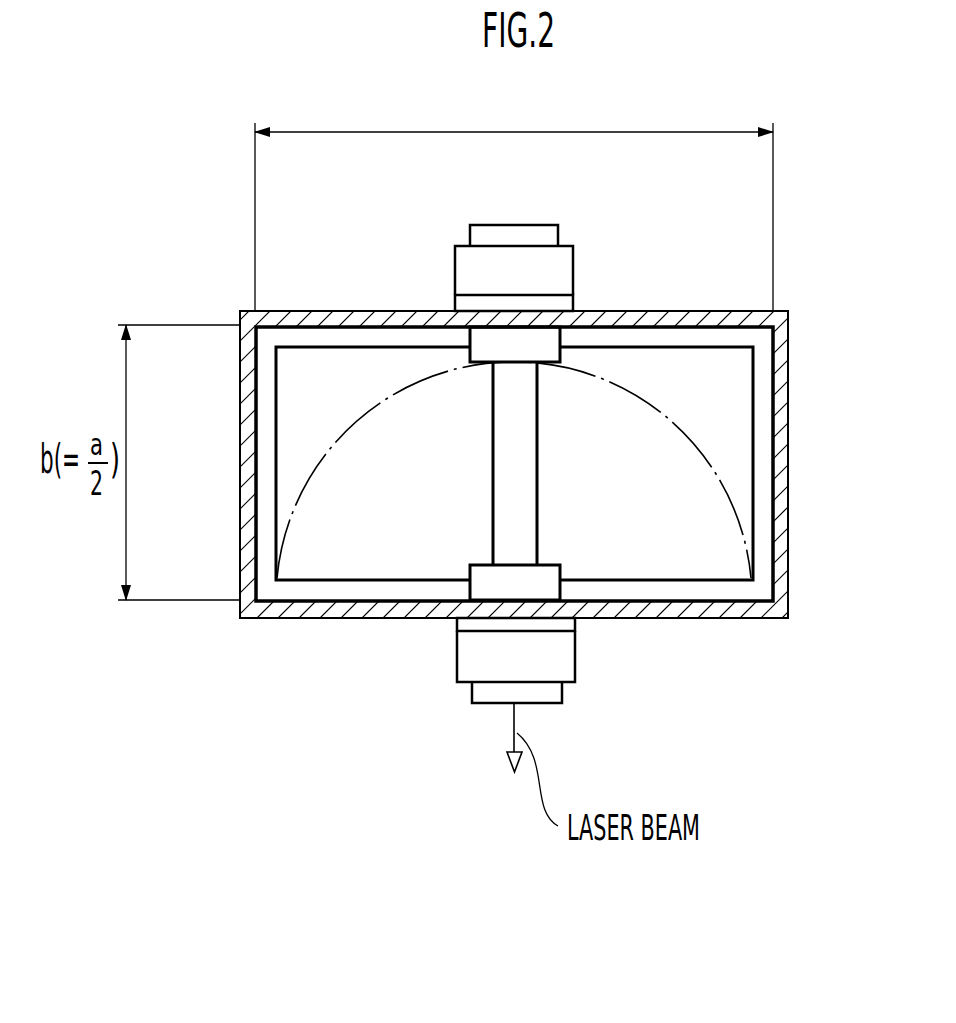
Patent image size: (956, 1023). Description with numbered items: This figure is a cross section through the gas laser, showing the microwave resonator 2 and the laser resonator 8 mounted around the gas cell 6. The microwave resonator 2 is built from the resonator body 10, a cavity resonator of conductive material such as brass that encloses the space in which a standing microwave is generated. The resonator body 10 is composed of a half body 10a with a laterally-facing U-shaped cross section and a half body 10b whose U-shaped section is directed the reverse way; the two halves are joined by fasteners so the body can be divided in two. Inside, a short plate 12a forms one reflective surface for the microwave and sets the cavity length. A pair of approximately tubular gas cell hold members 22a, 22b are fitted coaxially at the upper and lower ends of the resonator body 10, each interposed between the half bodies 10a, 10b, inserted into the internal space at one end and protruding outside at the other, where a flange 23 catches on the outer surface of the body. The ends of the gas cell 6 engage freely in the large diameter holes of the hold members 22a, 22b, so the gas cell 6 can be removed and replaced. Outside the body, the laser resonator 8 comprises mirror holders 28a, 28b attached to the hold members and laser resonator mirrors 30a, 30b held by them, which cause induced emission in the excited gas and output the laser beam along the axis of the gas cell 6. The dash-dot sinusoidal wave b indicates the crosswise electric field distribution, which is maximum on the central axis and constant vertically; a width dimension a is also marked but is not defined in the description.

The microwave resonator 2 is at (630, 300).
The gas cell 6 is at (493, 500).
The laser resonator 8 is at (575, 225).
The resonator body 10 is at (478, 443).
The half body 10a is at (700, 311).
The half body 10b is at (318, 311).
The short plate 12a is at (276, 368).
The gas cell hold member 22a is at (560, 352).
The gas cell hold member 22b is at (562, 577).
The flange 23 is at (455, 303).
The mirror holder 28a is at (455, 256).
The mirror holder 28b is at (575, 665).
The laser resonator mirror 30a is at (517, 225).
The laser resonator mirror 30b is at (493, 705).
The housing width a is at (514, 201).
The sinusoidal wave b is at (653, 440).